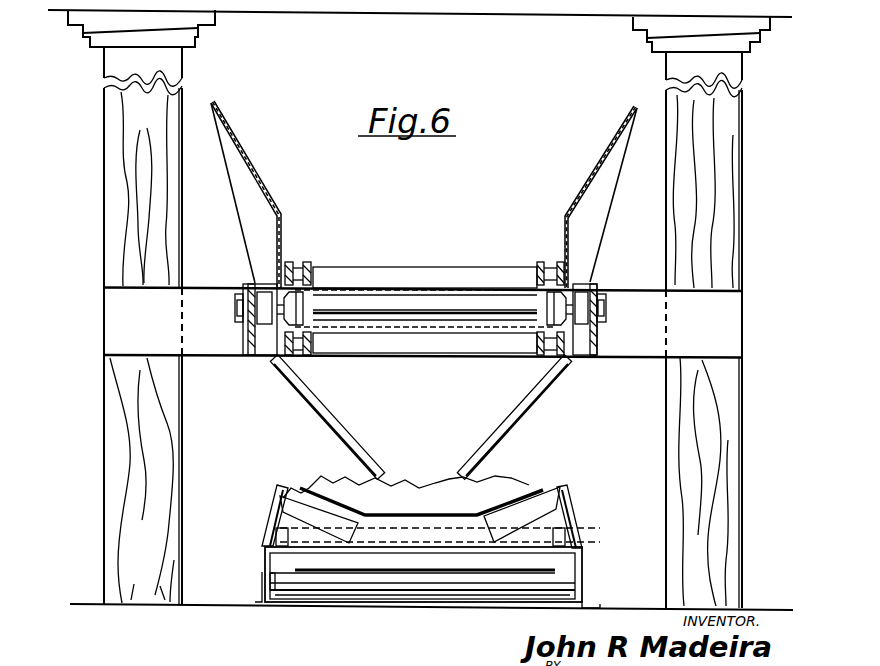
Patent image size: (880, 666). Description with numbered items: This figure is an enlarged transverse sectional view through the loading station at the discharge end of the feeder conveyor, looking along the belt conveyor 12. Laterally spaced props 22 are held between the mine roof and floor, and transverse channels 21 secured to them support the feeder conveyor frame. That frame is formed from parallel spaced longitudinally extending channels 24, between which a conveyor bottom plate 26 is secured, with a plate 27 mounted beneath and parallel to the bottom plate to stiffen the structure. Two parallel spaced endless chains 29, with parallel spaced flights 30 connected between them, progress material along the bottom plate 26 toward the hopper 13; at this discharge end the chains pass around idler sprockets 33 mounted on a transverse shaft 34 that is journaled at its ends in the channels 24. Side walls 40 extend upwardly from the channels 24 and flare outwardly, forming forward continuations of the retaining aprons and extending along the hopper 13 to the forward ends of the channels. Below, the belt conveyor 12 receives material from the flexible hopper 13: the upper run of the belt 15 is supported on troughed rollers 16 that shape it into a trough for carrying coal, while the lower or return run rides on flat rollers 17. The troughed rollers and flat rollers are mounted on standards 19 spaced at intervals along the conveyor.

The belt conveyor 12 is at (582, 531).
The flexible hopper 13 is at (284, 389).
The belt 15 is at (526, 492).
The troughed rollers 16 is at (293, 494).
The flat rollers 17 is at (362, 586).
The standards 19 is at (264, 531).
The transverse channels 21 is at (218, 356).
The props 22 is at (104, 491).
The longitudinally extending channels 24 is at (252, 282).
The conveyor bottom plate 26 is at (384, 278).
The plate 27 is at (395, 328).
The endless chains 29 is at (290, 266).
The flights 30 is at (425, 313).
The idler sprockets 33 is at (323, 284).
The transverse shaft 34 is at (421, 294).
The side walls 40 is at (254, 178).